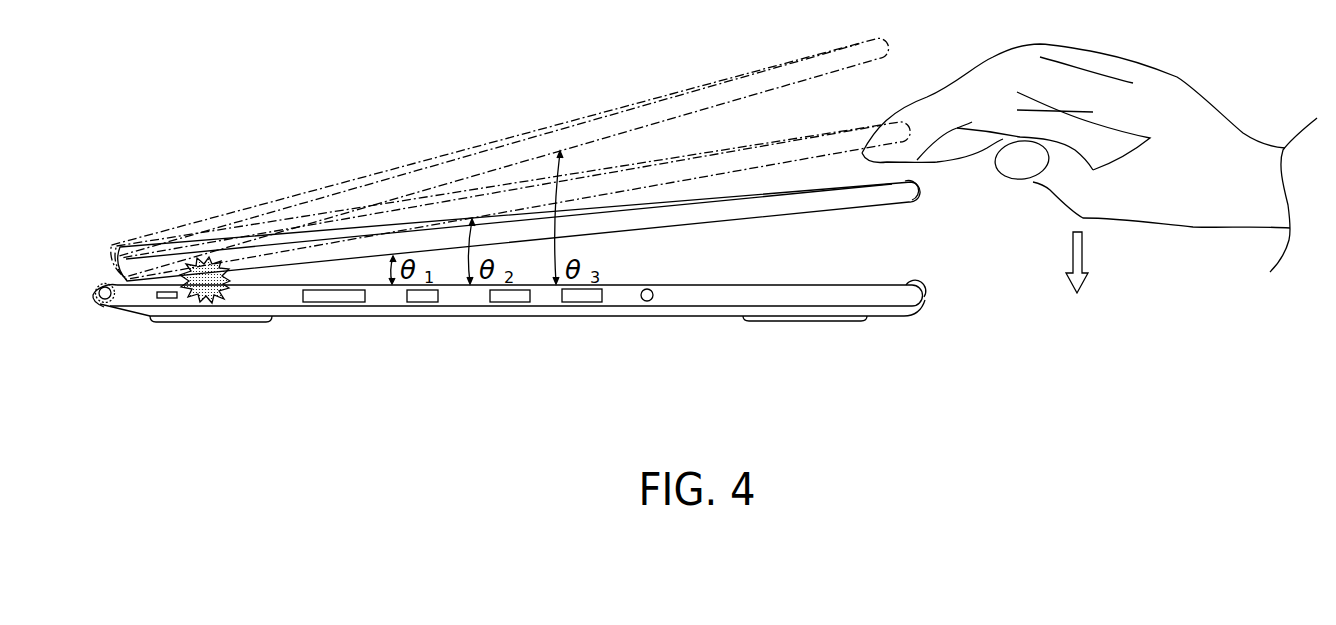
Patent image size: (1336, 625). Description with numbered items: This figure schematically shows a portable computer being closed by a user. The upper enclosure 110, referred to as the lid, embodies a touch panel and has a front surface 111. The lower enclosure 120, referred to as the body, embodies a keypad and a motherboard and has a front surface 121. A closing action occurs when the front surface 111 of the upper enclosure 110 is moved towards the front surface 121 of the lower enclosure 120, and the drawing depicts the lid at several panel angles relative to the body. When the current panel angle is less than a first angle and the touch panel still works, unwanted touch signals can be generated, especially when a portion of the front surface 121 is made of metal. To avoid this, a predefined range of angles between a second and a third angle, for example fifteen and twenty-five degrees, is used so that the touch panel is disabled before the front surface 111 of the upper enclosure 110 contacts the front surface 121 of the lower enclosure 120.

The upper enclosure 110 is at (822, 203).
The front surface 111 is at (888, 200).
The lower enclosure 120 is at (822, 296).
The front surface 121 is at (884, 284).